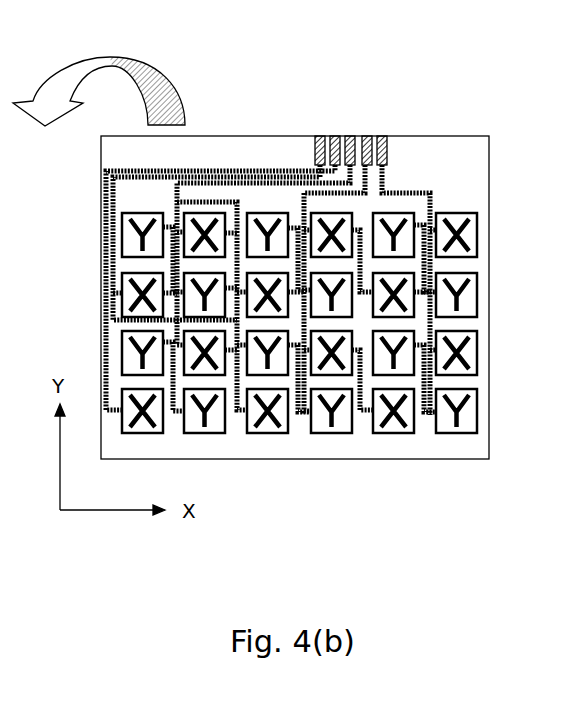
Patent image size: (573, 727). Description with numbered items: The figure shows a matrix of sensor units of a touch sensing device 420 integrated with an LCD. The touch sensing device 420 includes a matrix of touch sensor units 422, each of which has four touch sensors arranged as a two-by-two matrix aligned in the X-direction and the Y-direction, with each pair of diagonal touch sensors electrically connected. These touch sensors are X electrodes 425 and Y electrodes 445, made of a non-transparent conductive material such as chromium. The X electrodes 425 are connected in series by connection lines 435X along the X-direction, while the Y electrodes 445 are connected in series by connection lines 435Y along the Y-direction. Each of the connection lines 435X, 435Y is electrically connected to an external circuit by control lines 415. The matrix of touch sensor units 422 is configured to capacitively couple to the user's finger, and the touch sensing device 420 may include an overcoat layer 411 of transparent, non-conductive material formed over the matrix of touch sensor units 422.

The touch sensing device 420 is at (387, 99).
The overcoat layer 411 is at (448, 173).
The touch sensor unit 422 is at (209, 204).
The control line 415 is at (278, 173).
The X electrode 425 is at (477, 231).
The Y electrode 445 is at (477, 302).
The connection line 435X is at (362, 409).
The connection line 435Y is at (430, 415).